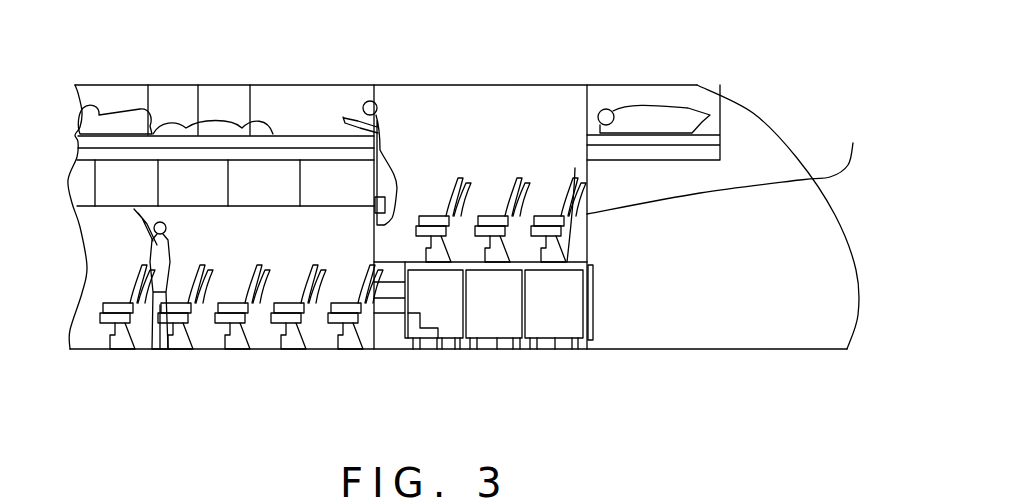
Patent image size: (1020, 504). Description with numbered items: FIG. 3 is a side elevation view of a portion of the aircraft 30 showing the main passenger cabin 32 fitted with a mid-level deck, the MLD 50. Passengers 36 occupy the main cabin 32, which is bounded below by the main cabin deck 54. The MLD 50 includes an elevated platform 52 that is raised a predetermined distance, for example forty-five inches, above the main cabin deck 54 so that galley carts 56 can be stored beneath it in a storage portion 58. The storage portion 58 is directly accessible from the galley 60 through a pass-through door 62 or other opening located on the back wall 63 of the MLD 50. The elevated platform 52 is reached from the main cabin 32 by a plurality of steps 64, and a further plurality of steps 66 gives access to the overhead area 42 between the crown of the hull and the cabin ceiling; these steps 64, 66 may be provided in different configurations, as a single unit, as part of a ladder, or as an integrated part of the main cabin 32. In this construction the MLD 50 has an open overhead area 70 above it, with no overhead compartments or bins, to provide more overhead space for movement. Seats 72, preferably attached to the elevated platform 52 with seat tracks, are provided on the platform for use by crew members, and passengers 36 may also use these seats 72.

The aircraft 30 is at (648, 58).
The main passenger cabin 32 is at (284, 247).
The passengers 36 is at (304, 326).
The overhead area 42 is at (305, 128).
The MLD (mid-level deck) 50 is at (604, 237).
The elevated platform 52 is at (466, 262).
The main cabin deck 54 is at (207, 350).
The galley carts 56 is at (487, 307).
The storage portion 58 is at (583, 350).
The galley 60 is at (750, 265).
The pass-through door 62 is at (593, 308).
The back wall 63 is at (727, 166).
The steps 64 is at (388, 325).
The steps 66 is at (401, 252).
The open overhead area 70 is at (467, 131).
The seats 72 is at (543, 210).